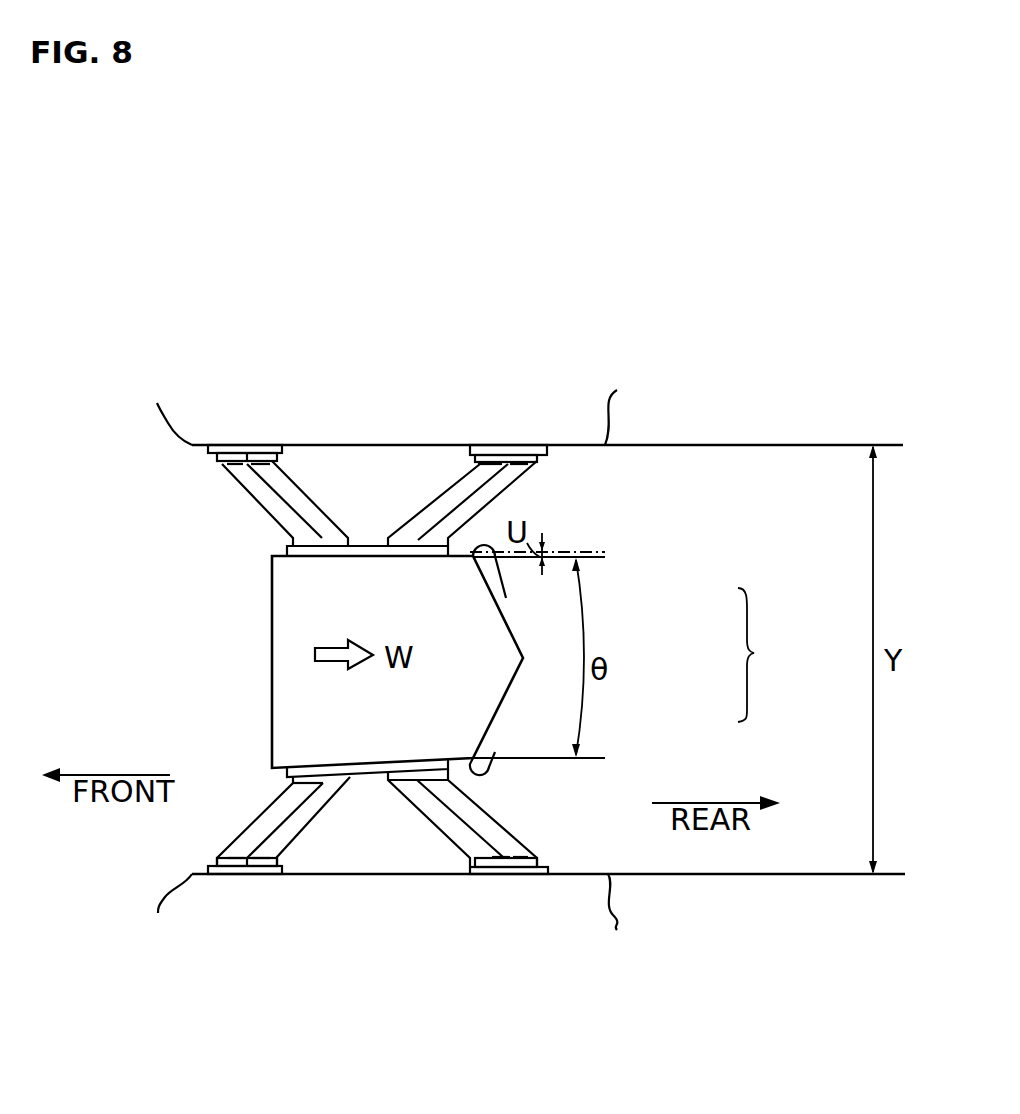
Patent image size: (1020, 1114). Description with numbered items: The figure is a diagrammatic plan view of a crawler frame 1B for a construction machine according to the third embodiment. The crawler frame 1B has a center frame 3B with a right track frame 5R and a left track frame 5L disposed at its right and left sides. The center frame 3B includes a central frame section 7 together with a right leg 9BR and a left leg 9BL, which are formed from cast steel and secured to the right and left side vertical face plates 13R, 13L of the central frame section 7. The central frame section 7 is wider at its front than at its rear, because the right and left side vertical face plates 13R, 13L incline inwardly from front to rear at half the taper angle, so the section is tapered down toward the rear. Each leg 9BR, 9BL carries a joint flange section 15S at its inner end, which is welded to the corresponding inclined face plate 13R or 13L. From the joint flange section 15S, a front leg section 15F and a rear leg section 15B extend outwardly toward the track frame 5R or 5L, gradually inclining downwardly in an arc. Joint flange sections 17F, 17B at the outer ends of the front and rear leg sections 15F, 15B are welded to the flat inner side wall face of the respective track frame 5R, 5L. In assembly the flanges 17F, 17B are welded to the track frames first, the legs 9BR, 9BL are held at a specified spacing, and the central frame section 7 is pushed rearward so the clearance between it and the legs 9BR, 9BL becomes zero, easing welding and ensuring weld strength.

The crawler frame 1B is at (260, 670).
The center frame 3B is at (810, 667).
The right track frame 5R is at (545, 405).
The left track frame 5L is at (570, 907).
The central frame section 7 is at (495, 660).
The right leg 9BR is at (455, 537).
The left leg 9BL is at (471, 800).
The right side vertical face plate 13R is at (506, 598).
The left side vertical face plate 13L is at (495, 752).
The front leg section 15F is at (290, 478).
The rear leg section 15B is at (510, 500).
The joint flange section 15S is at (367, 556).
The joint flange section 17F is at (222, 465).
The joint flange section 17B is at (547, 462).